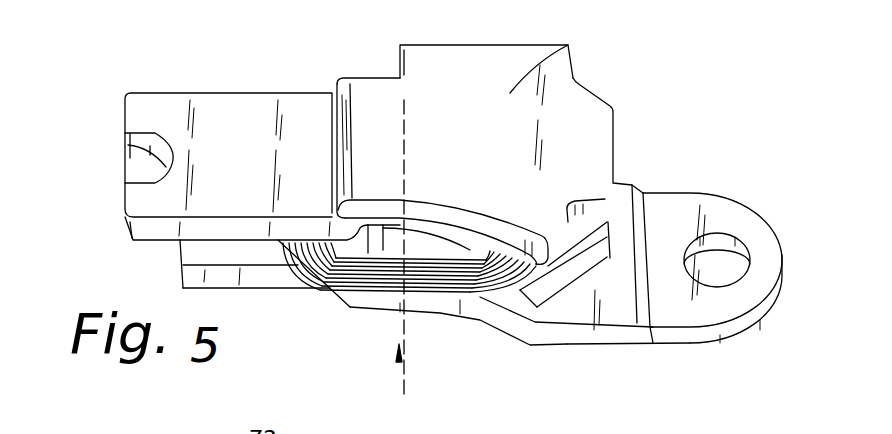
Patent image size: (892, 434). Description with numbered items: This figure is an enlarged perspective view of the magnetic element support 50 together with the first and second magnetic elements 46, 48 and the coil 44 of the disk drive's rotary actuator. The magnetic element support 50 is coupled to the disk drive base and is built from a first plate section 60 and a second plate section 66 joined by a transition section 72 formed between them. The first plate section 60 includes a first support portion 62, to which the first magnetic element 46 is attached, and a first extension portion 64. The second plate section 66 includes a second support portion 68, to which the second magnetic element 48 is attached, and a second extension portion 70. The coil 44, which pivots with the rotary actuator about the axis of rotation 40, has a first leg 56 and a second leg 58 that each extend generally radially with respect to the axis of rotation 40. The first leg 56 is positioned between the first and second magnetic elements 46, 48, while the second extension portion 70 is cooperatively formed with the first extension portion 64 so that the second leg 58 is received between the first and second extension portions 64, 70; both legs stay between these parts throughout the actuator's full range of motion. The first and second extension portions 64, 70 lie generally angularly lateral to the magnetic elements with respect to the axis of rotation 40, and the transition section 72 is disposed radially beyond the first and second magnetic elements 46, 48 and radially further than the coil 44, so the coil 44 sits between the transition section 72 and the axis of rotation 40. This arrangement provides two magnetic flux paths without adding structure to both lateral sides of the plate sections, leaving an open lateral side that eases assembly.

The axis of rotation 40 is at (400, 371).
The coil 44 is at (440, 283).
The first magnetic element 46 is at (540, 307).
The second magnetic element 48 is at (577, 232).
The magnetic element support 50 is at (92, 123).
The first leg 56 is at (480, 282).
The second leg 58 is at (300, 265).
The first plate section 60 is at (592, 330).
The first support portion 62 is at (668, 343).
The first extension portion 64 is at (187, 282).
The second plate section 66 is at (532, 118).
The second support portion 68 is at (568, 45).
The second extension portion 70 is at (229, 122).
The transition section 72 is at (470, 47).